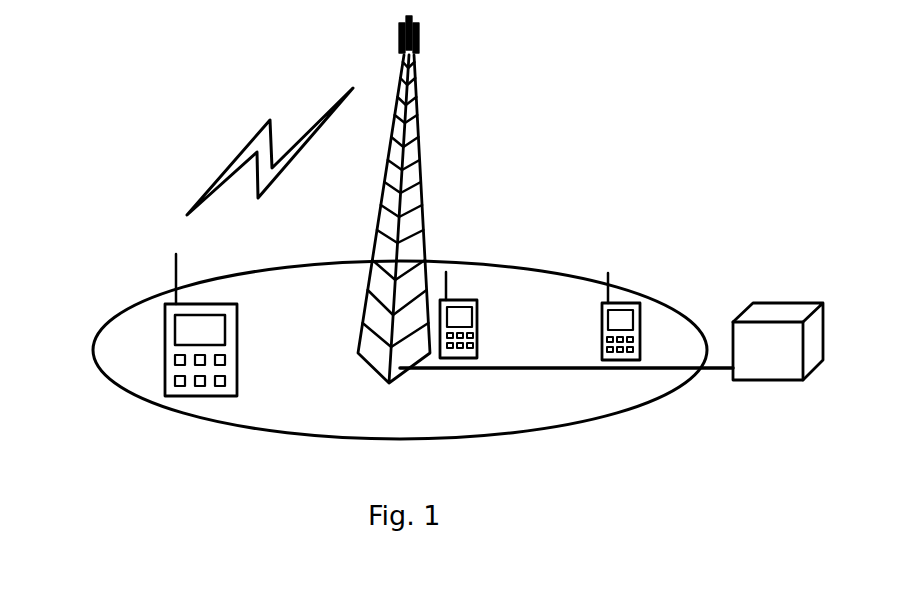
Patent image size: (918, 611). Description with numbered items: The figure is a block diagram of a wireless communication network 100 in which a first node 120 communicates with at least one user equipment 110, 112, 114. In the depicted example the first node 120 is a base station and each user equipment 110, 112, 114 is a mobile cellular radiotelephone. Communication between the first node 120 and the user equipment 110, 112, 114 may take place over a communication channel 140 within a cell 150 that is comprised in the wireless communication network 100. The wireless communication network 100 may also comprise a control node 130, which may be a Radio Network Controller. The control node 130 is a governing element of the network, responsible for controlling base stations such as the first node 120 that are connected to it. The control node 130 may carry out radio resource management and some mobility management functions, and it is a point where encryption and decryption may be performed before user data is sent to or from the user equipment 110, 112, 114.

The wireless communication network 100 is at (722, 100).
The user equipment 110 is at (160, 332).
The user equipment 112 is at (472, 300).
The user equipment 114 is at (643, 308).
The first node 120 is at (420, 143).
The control node 130 is at (792, 362).
The communication channel 140 is at (238, 150).
The cell 150 is at (482, 419).